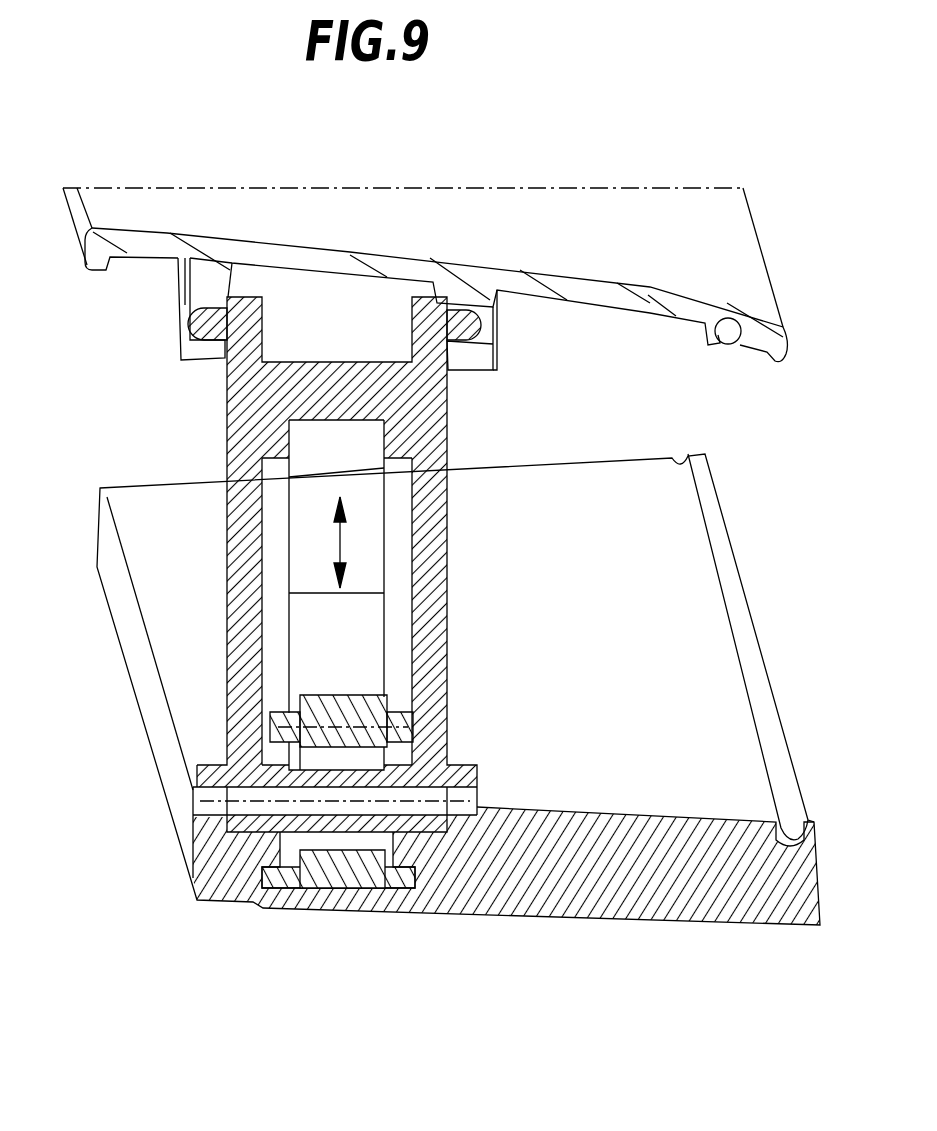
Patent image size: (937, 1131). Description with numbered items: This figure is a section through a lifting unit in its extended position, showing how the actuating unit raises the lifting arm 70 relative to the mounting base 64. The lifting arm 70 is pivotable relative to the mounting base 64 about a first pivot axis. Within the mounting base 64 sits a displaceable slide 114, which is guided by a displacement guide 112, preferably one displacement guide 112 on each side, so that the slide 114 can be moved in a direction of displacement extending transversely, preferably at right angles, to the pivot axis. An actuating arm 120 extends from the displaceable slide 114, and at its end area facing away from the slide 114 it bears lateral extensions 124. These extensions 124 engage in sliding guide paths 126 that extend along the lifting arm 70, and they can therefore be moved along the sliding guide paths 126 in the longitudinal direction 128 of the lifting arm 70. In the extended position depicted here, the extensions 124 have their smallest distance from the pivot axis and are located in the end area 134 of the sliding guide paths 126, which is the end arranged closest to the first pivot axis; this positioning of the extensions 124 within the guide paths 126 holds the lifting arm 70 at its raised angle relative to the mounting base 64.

The mounting base 64 is at (612, 880).
The lifting arm 70 is at (447, 626).
The displacement guide 112 is at (260, 880).
The displaceable slide 114 is at (333, 870).
The actuating arm 120 is at (340, 717).
The lateral extensions 124 is at (280, 730).
The sliding guide paths 126 is at (276, 531).
The longitudinal direction 128 is at (346, 543).
The end area 134 is at (278, 755).